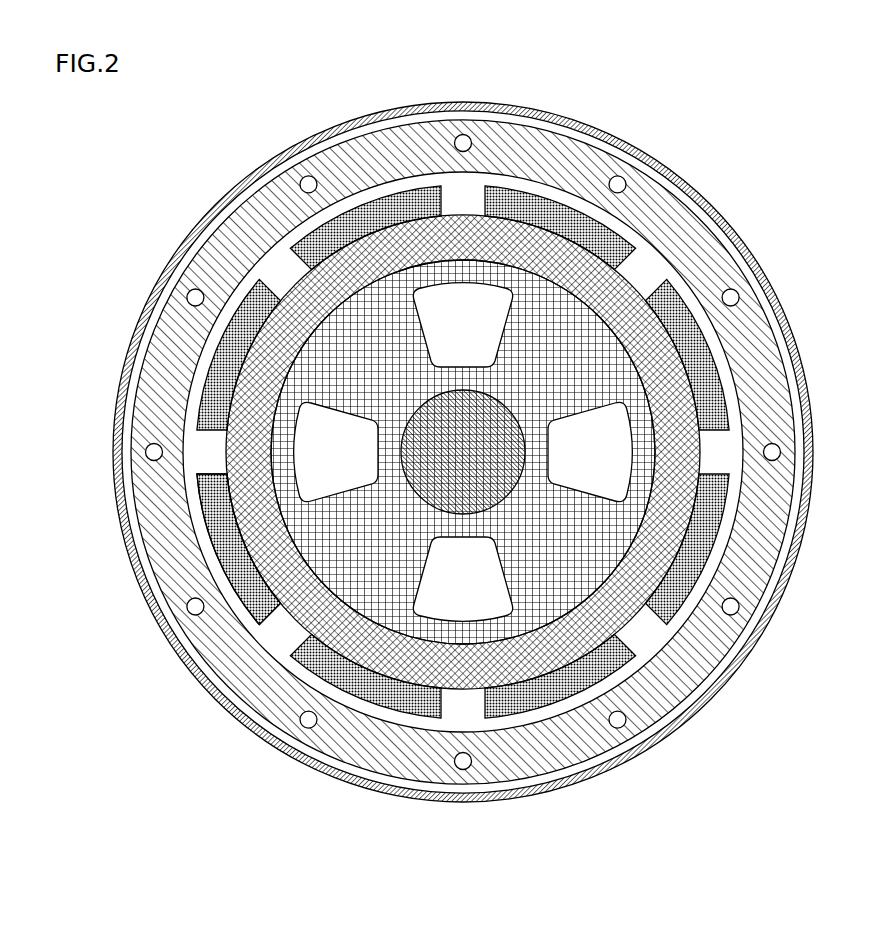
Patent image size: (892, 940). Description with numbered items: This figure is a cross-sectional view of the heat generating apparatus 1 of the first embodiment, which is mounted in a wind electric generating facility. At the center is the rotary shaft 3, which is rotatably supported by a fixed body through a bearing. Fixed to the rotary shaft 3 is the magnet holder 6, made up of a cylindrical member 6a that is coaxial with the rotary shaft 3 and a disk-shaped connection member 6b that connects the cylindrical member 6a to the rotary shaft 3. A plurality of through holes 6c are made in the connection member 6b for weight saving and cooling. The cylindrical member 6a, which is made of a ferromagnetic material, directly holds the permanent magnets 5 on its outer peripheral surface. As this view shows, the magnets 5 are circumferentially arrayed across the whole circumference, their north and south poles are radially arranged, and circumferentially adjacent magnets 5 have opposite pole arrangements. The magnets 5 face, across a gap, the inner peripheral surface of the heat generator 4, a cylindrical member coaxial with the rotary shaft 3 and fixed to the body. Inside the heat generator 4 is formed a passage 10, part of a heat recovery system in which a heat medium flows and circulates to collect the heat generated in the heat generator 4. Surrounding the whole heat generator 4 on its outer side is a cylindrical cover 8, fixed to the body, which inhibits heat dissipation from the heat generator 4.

The heat generating apparatus 1 is at (278, 132).
The rotary shaft 3 is at (420, 505).
The heat generator 4 is at (690, 196).
The permanent magnets 5 is at (683, 292).
The magnet holder 6 is at (88, 545).
The cylindrical member 6a is at (235, 515).
The connection member 6b is at (250, 604).
The through holes 6c is at (212, 553).
The cover 8 is at (597, 123).
The passage 10 is at (632, 166).